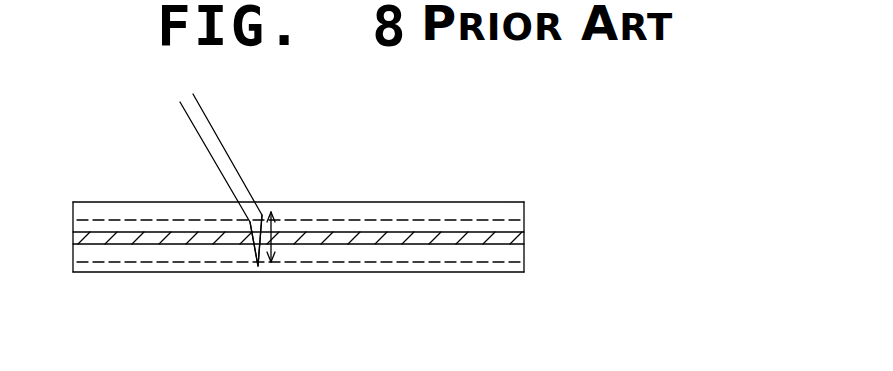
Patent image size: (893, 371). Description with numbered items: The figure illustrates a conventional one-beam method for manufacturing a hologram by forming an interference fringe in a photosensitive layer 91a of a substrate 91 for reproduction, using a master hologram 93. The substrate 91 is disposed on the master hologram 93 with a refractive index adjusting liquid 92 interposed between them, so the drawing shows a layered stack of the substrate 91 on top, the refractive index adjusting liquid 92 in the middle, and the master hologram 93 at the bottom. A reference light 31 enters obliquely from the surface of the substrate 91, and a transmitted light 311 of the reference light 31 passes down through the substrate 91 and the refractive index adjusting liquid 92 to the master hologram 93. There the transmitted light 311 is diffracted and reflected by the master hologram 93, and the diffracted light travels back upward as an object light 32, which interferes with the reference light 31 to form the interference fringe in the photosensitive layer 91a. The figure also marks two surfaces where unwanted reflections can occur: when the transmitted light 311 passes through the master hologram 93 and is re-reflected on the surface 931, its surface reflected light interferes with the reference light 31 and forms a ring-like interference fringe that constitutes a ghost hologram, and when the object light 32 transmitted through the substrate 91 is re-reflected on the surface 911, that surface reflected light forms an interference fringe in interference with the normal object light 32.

The reference light 31 is at (217, 130).
The transmitted light 311 is at (250, 250).
The object light 32 is at (273, 212).
The substrate 91 is at (518, 212).
The surface 911 is at (440, 202).
The photosensitive layer 91a is at (497, 220).
The refractive index adjusting liquid 92 is at (72, 238).
The master hologram 93 is at (515, 253).
The surface 931 is at (422, 272).